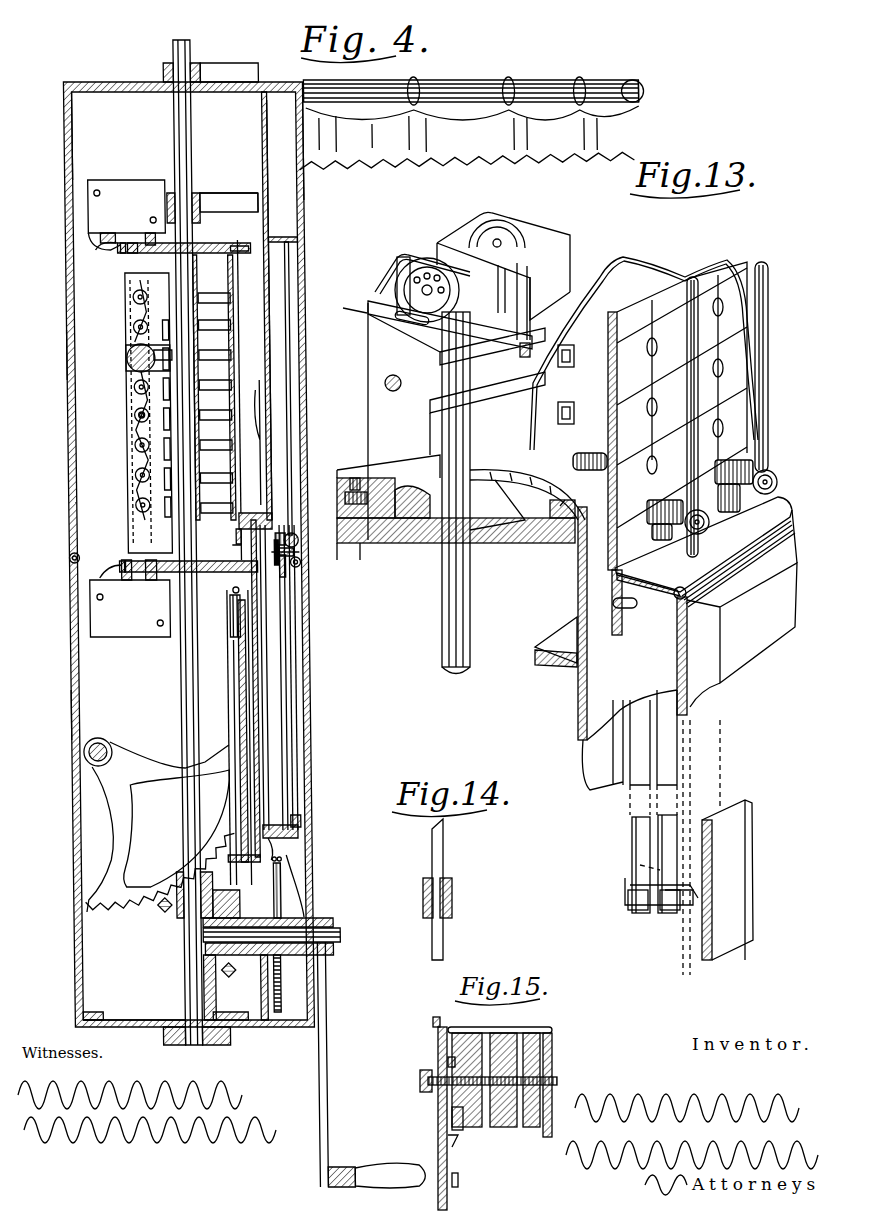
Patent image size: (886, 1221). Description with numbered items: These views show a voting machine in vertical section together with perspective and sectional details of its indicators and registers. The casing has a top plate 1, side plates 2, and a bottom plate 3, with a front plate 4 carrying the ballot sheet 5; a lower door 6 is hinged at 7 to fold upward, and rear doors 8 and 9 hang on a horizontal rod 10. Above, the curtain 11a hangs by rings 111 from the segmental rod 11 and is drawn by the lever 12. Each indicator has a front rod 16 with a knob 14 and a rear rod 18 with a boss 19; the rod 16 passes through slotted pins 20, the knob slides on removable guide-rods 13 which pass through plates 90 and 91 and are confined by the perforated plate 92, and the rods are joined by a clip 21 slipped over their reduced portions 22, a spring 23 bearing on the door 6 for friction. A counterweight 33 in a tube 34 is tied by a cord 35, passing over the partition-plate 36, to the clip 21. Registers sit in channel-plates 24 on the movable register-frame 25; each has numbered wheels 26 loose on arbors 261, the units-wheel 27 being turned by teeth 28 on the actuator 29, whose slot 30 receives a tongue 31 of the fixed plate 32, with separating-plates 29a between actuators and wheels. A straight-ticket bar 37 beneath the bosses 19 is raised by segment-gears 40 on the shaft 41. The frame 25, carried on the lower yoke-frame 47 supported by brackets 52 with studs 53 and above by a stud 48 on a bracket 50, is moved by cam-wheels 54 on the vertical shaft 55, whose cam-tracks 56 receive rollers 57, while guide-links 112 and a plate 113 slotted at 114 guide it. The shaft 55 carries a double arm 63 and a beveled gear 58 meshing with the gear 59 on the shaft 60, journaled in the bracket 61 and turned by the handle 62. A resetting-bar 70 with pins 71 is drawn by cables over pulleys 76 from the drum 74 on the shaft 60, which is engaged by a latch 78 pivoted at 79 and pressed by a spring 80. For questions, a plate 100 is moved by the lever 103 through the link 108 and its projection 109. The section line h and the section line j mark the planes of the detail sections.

In FIG. 4, the top plate 1 is at (82, 92).
In FIG. 4, the side plates 2 is at (97, 136).
In FIG. 4, the bottom plate 3 is at (134, 1016).
In FIG. 4, the front plate or support 4 is at (275, 385).
In FIG. 13, the front plate or support 4 is at (690, 275).
In FIG. 4, the ballot sheet 5 is at (264, 410).
In FIG. 13, the ballot sheet 5 is at (677, 419).
In FIG. 4, the door 6 is at (300, 686).
In FIG. 13, the door 6 is at (749, 735).
In FIG. 4, the hinge 7 is at (300, 562).
In FIG. 13, the hinge 7 is at (695, 600).
In FIG. 4, the rear door 8 is at (70, 340).
In FIG. 4, the rear door 9 is at (70, 703).
In FIG. 4, the horizontally-extending rod 10 is at (70, 556).
In FIG. 4, the segmental rod 11 is at (548, 85).
In FIG. 4, the barrier or curtain 11a is at (469, 138).
In FIG. 4, the operating arm or lever 12 is at (170, 74).
In FIG. 4, the guide-rods 13 is at (296, 256).
In FIG. 13, the guide-rods 13 is at (770, 298).
In FIG. 4, the operating knob or handle 14 is at (296, 535).
In FIG. 13, the operating knob or handle 14 is at (710, 522).
In FIG. 4, the front indicator rod 16 is at (292, 660).
In FIG. 13, the front indicator rod 16 is at (660, 668).
In FIG. 4, the rear indicator rod 18 is at (290, 638).
In FIG. 13, the rear indicator rod 18 is at (632, 830).
In FIG. 14, the rear indicator rod 18 is at (443, 848).
In FIG. 4, the boss or abutment 19 is at (250, 515).
In FIG. 13, the boss or abutment 19 is at (573, 462).
In FIG. 4, the slotted pins 20 is at (296, 550).
In FIG. 13, the slotted pins 20 is at (755, 497).
In FIG. 4, the clip or connecting-piece 21 is at (296, 832).
In FIG. 13, the clip or connecting-piece 21 is at (628, 897).
In FIG. 14, the clip or connecting-piece 21 is at (452, 884).
In FIG. 14, the reduced portions 22 is at (452, 904).
In FIG. 4, the spring 23 is at (298, 820).
In FIG. 13, the spring 23 is at (690, 885).
In FIG. 4, the channel-plate 24 is at (136, 487).
In FIG. 13, the channel-plate 24 is at (503, 276).
In FIG. 4, the register-frame 25 is at (135, 252).
In FIG. 13, the numbered wheels 26 is at (503, 238).
In FIG. 15, the numbered wheels 26 is at (548, 1040).
In FIG. 4, the units-wheel 27 is at (130, 362).
In FIG. 13, the units-wheel 27 is at (475, 245).
In FIG. 15, the units-wheel 27 is at (472, 1045).
In FIG. 13, the pallets or teeth 28 is at (370, 330).
In FIG. 15, the pallets or teeth 28 is at (452, 1065).
In FIG. 4, the counter actuator or slide 29 is at (170, 300).
In FIG. 13, the counter actuator or slide 29 is at (460, 348).
In FIG. 15, the counter actuator or slide 29 is at (452, 1195).
In FIG. 4, the separating-plates 29a is at (130, 352).
In FIG. 15, the separating-plates 29a is at (448, 1092).
In FIG. 4, the slot 30 is at (216, 380).
In FIG. 13, the slot 30 is at (527, 343).
In FIG. 4, the tongues 31 is at (234, 478).
In FIG. 13, the tongues 31 is at (558, 362).
In FIG. 13, the plate 32 is at (644, 353).
In FIG. 4, the counterweight 33 is at (230, 620).
In FIG. 4, the tube 34 is at (228, 672).
In FIG. 4, the cord 35 is at (280, 586).
In FIG. 4, the partition-plate 36 is at (272, 708).
In FIG. 13, the partition-plate 36 is at (578, 588).
In FIG. 4, the straight-ticket bar 37 is at (240, 555).
In FIG. 13, the straight-ticket bar 37 is at (560, 500).
In FIG. 4, the segment-gears 40 is at (158, 872).
In FIG. 4, the shaft 41 is at (100, 750).
In FIG. 4, the lower yoke-frame 47 is at (140, 580).
In FIG. 13, the lower yoke-frame 47 is at (380, 543).
In FIG. 4, the headed stud 48 is at (155, 228).
In FIG. 4, the bracket 50 is at (114, 215).
In FIG. 4, the brackets 52 is at (130, 637).
In FIG. 4, the headed studs 53 is at (118, 585).
In FIG. 4, the cam-wheels 54 is at (215, 243).
In FIG. 13, the cam-wheels 54 is at (435, 545).
In FIG. 4, the vertical shaft 55 is at (180, 48).
In FIG. 13, the vertical shaft 55 is at (470, 640).
In FIG. 4, the cam-track 56 is at (242, 246).
In FIG. 13, the cam-track 56 is at (555, 548).
In FIG. 4, the rollers or projections 57 is at (124, 252).
In FIG. 13, the rollers or projections 57 is at (350, 484).
In FIG. 4, the beveled gear 58 is at (160, 910).
In FIG. 4, the gear 59 is at (234, 979).
In FIG. 4, the shaft 60 is at (199, 936).
In FIG. 4, the bracket 61 is at (199, 970).
In FIG. 4, the operating-handle 62 is at (321, 1015).
In FIG. 4, the double arm 63 is at (222, 70).
In FIG. 4, the resetting-bar 70 is at (285, 590).
In FIG. 13, the resetting-bar 70 is at (617, 630).
In FIG. 13, the pins 71 is at (633, 603).
In FIG. 4, the drum 74 is at (278, 972).
In FIG. 4, the pulleys 76 is at (284, 858).
In FIG. 4, the latch 78 is at (313, 887).
In FIG. 4, the pivot 79 is at (330, 920).
In FIG. 4, the spring 80 is at (303, 900).
In FIG. 4, the plate 90 is at (300, 565).
In FIG. 4, the plate 91 is at (280, 237).
In FIG. 4, the plate 92 is at (320, 186).
In FIG. 4, the movable plate 100 is at (293, 290).
In FIG. 4, the lever 103 is at (263, 200).
In FIG. 4, the link 108 is at (237, 193).
In FIG. 4, the projection 109 is at (212, 208).
In FIG. 4, the rings 111 is at (645, 92).
In FIG. 4, the guide-links 112 is at (100, 250).
In FIG. 4, the plate 113 is at (205, 560).
In FIG. 13, the plate 113 is at (497, 505).
In FIG. 4, the slot 114 is at (160, 560).
In FIG. 13, the slot 114 is at (420, 520).
In FIG. 4, the arbors 261 is at (137, 415).
In FIG. 13, the arbors 261 is at (392, 374).
In FIG. 15, the arbors 261 is at (557, 1080).
In FIG. 13, the section line jj j is at (411, 338).
In FIG. 13, the section line hh h is at (635, 865).